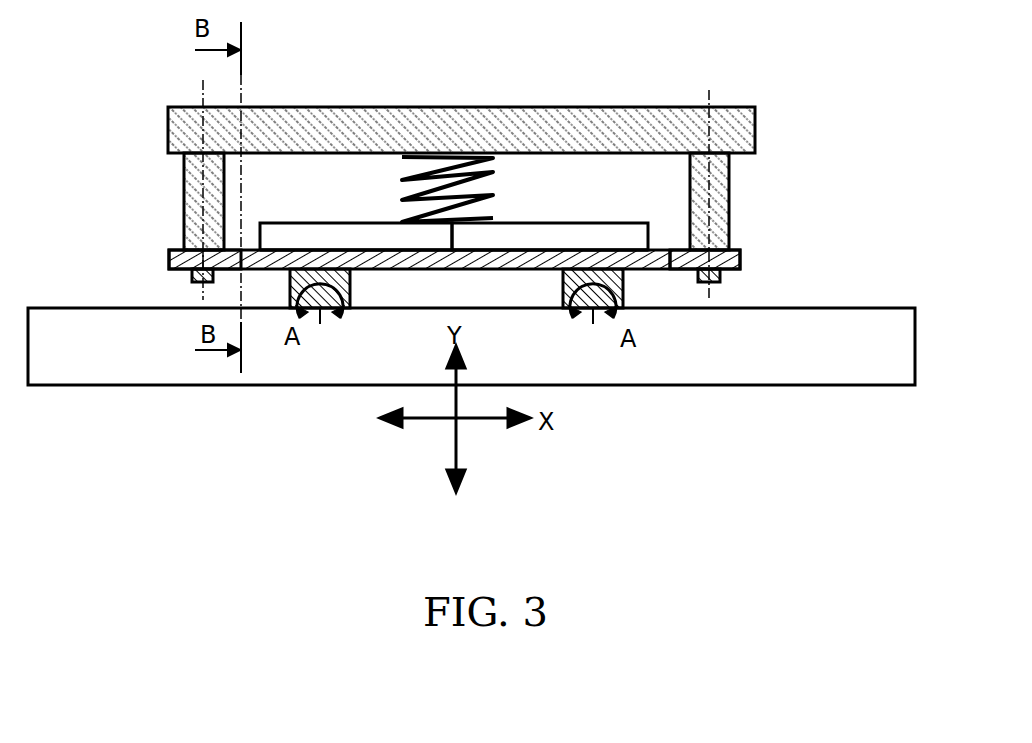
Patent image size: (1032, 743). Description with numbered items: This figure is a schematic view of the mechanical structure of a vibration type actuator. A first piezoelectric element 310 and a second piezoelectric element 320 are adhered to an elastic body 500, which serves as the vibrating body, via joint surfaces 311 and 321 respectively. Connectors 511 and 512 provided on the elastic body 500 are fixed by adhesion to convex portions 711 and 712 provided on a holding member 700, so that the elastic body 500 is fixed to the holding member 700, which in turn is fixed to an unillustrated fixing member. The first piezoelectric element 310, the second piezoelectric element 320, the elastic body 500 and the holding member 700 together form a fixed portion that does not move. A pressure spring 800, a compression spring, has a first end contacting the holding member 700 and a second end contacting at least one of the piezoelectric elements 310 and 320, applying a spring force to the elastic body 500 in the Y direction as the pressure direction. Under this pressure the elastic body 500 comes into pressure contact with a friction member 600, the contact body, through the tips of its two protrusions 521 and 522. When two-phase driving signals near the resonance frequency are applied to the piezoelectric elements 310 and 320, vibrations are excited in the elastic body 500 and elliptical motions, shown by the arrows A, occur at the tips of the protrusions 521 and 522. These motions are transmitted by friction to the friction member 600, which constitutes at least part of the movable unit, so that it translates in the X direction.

The holding member 700 is at (757, 118).
The pressure spring 800 is at (510, 192).
The first piezoelectric element 310 is at (368, 222).
The joint surface 311 is at (335, 250).
The second piezoelectric element 320 is at (570, 222).
The joint surface 321 is at (585, 250).
The elastic body 500 is at (393, 270).
The connector 511 is at (170, 250).
The connector 512 is at (740, 258).
The protrusion 521 is at (320, 312).
The protrusion 522 is at (595, 312).
The friction member 600 is at (800, 308).
The convex portion 711 is at (196, 283).
The convex portion 712 is at (715, 283).